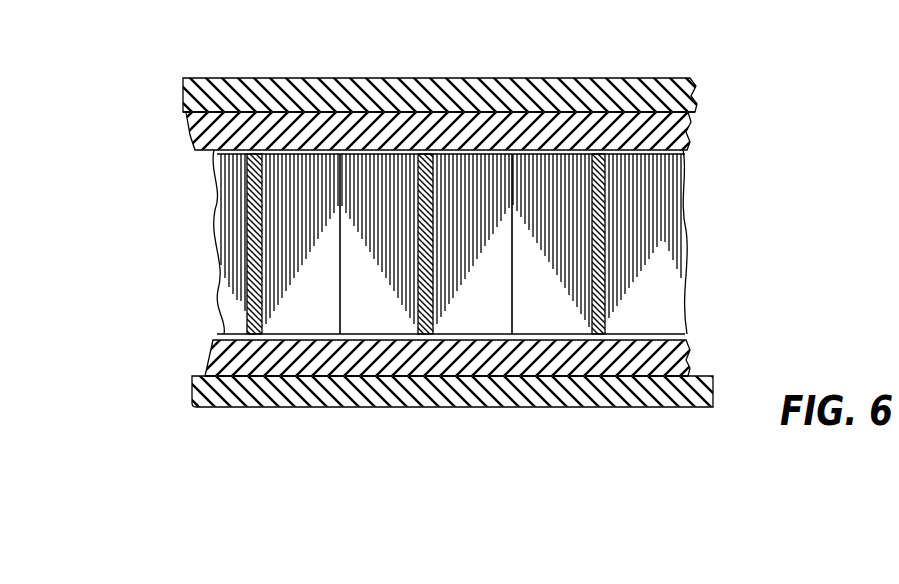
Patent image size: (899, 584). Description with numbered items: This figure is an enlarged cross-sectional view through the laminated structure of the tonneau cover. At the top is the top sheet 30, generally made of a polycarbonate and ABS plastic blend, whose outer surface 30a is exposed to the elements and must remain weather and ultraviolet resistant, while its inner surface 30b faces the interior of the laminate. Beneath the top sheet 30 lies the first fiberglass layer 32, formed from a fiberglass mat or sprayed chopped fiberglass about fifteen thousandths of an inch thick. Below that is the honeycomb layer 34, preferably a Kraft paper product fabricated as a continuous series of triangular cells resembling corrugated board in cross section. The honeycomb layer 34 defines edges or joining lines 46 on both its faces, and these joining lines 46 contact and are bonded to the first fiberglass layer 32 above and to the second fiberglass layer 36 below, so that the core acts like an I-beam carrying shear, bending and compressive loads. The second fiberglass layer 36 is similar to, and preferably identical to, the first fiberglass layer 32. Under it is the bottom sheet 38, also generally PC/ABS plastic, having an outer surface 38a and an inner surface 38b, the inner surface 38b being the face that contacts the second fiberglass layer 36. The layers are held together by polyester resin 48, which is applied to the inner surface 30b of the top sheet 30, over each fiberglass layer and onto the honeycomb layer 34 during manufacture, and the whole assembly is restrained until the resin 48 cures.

The top sheet 30 is at (412, 103).
The outer surface 30a is at (273, 78).
The inner surface 30b is at (409, 103).
The first fiberglass layer 32 is at (627, 130).
The honeycomb layer 34 is at (605, 240).
The second fiberglass layer 36 is at (583, 365).
The bottom sheet 38 is at (435, 381).
The outer surface 38a is at (262, 407).
The inner surface 38b is at (423, 377).
The joining lines 46 is at (598, 336).
The polyester resin 48 is at (396, 112).